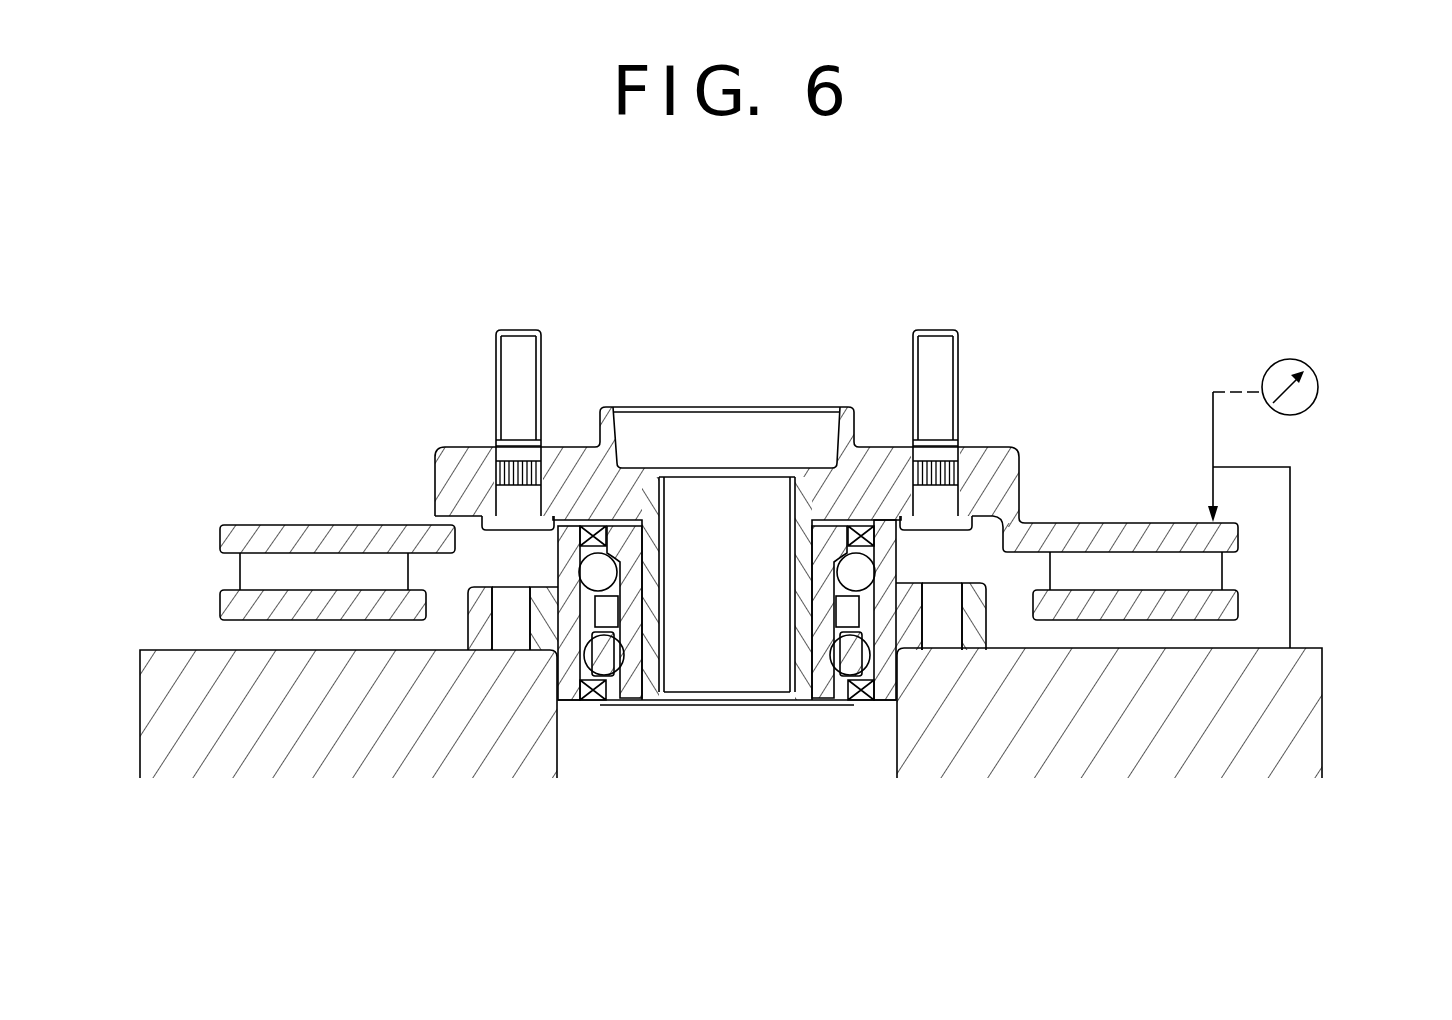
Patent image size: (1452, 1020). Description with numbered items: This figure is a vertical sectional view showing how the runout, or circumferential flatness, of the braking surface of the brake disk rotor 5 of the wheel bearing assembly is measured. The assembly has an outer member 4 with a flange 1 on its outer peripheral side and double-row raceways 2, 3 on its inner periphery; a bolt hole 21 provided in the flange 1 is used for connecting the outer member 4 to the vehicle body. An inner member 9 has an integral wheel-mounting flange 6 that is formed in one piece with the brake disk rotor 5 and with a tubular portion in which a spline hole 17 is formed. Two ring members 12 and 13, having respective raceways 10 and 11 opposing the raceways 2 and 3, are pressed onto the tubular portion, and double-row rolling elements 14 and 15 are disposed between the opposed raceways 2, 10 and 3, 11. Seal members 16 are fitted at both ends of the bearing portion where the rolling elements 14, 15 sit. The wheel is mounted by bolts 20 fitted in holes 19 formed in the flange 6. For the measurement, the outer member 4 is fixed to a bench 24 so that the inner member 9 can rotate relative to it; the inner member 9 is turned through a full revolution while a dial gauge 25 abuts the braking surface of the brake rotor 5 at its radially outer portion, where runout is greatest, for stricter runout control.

The flange 1 is at (468, 597).
The raceway 2 is at (560, 575).
The raceway 3 is at (533, 737).
The outer member 4 is at (993, 624).
The brake disk rotor 5 is at (228, 606).
The wheel-mounting flange 6 is at (1020, 458).
The inner member 9 is at (873, 448).
The raceway 10 is at (663, 537).
The raceway 11 is at (647, 706).
The ring member 12 is at (637, 597).
The ring member 13 is at (618, 703).
The rolling elements 14 is at (617, 570).
The rolling elements 15 is at (622, 655).
The seal members 16 is at (586, 526).
The spline hole 17 is at (668, 492).
The holes 19 is at (497, 445).
The bolts 20 is at (515, 350).
The bolt hole 21 is at (500, 650).
The bench 24 is at (1300, 718).
The dial gauge 25 is at (1320, 378).